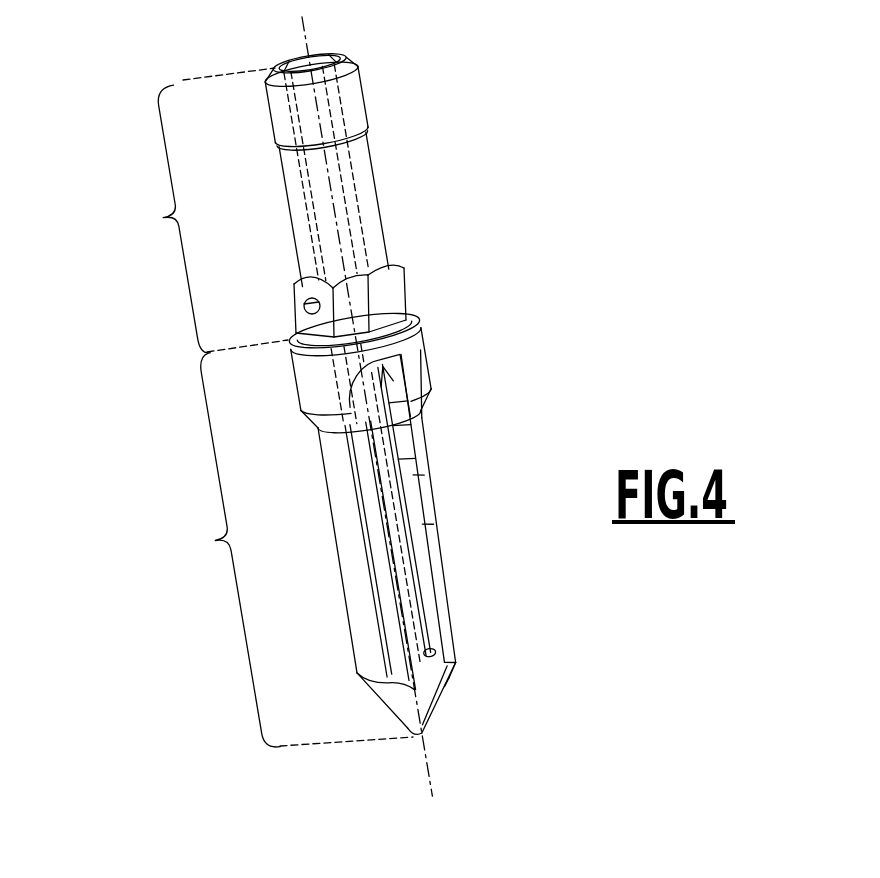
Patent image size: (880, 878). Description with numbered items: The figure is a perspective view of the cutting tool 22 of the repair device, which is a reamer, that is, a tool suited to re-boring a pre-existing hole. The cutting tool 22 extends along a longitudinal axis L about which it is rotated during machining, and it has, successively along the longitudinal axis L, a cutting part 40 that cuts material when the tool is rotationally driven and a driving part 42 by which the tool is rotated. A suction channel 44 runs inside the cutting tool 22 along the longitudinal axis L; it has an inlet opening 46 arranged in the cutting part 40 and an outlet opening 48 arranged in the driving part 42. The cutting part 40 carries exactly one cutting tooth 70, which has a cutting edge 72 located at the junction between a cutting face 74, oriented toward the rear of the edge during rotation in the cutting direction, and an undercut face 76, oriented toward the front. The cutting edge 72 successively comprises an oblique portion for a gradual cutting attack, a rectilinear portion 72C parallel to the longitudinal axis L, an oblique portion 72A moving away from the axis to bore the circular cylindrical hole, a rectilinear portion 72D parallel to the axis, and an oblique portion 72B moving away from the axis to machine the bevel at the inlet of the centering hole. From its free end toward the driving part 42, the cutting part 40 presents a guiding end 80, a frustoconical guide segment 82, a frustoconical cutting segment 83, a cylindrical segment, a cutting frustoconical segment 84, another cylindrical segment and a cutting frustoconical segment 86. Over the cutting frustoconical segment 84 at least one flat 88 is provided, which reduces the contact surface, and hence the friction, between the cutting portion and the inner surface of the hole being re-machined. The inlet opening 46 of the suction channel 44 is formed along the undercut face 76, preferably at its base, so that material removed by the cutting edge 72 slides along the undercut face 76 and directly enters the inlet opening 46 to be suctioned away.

The cutting tool 22 is at (117, 507).
The cutting part 40 is at (298, 551).
The driving part 42 is at (205, 212).
The suction channel 44 is at (355, 185).
The inlet opening 46 is at (417, 422).
The outlet opening 48 is at (321, 61).
The cutting tooth 70 is at (478, 656).
The cutting edge 72 is at (442, 620).
The oblique portion 72A is at (416, 466).
The oblique portion 72B is at (415, 397).
The rectilinear portion 72C is at (453, 668).
The rectilinear portion 72D is at (414, 450).
The cutting face 74 is at (437, 550).
The undercut face 76 is at (417, 505).
The guiding end 80 is at (412, 735).
The frustoconical guide segment 82 is at (440, 710).
The frustoconical cutting segment 83 is at (448, 680).
The cutting frustoconical segment 84 is at (362, 582).
The cutting frustoconical segment 86 is at (322, 418).
The flat 88 is at (347, 512).
The longitudinal axis L is at (433, 772).